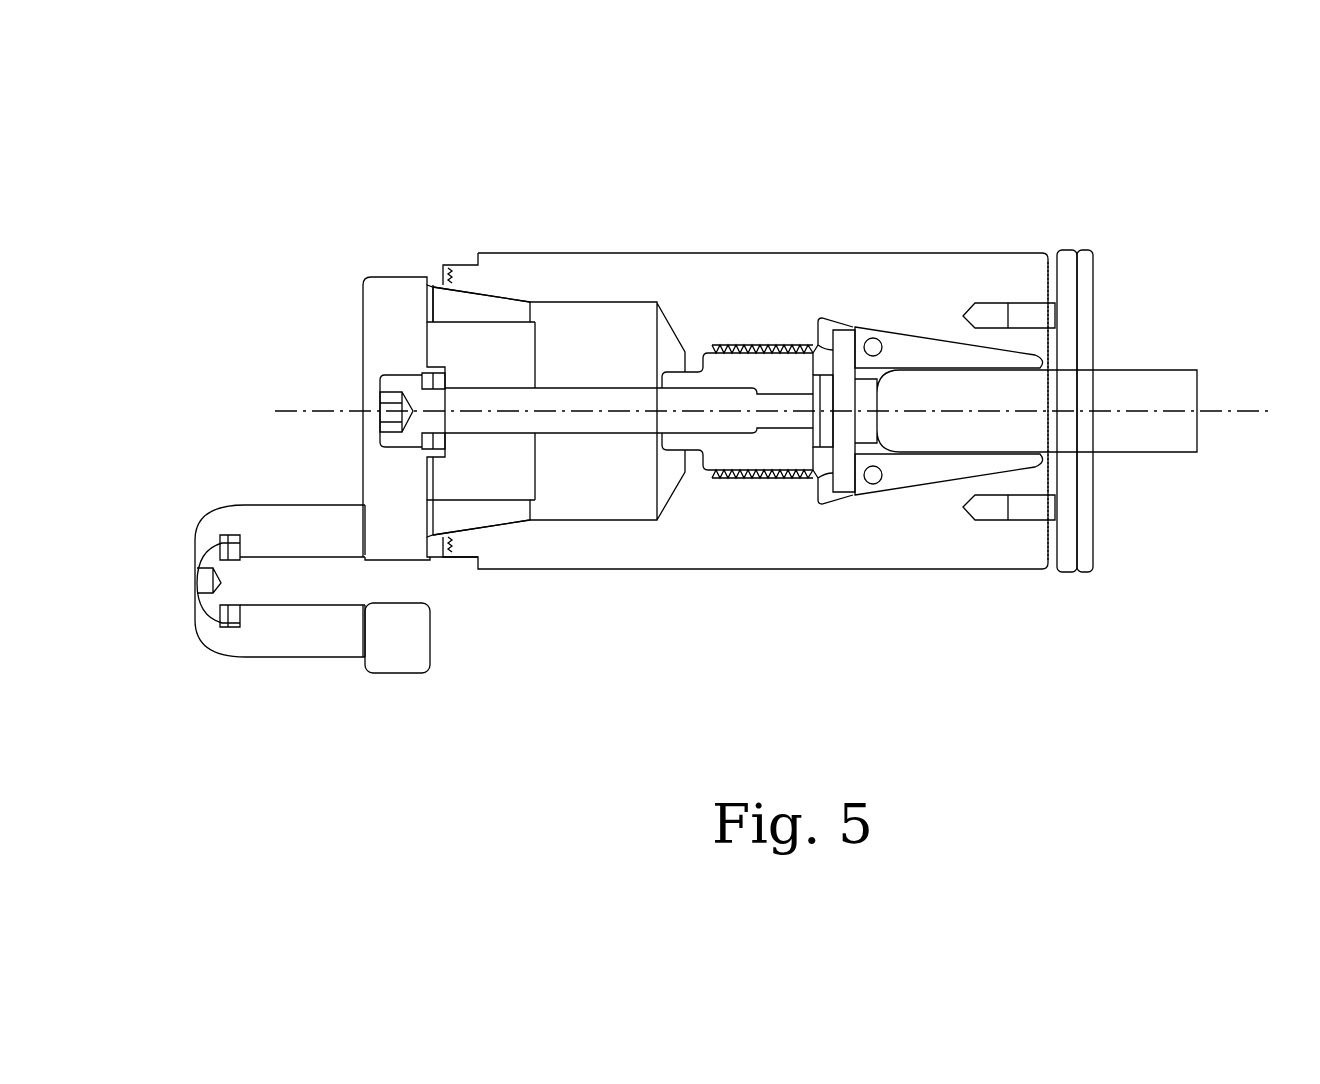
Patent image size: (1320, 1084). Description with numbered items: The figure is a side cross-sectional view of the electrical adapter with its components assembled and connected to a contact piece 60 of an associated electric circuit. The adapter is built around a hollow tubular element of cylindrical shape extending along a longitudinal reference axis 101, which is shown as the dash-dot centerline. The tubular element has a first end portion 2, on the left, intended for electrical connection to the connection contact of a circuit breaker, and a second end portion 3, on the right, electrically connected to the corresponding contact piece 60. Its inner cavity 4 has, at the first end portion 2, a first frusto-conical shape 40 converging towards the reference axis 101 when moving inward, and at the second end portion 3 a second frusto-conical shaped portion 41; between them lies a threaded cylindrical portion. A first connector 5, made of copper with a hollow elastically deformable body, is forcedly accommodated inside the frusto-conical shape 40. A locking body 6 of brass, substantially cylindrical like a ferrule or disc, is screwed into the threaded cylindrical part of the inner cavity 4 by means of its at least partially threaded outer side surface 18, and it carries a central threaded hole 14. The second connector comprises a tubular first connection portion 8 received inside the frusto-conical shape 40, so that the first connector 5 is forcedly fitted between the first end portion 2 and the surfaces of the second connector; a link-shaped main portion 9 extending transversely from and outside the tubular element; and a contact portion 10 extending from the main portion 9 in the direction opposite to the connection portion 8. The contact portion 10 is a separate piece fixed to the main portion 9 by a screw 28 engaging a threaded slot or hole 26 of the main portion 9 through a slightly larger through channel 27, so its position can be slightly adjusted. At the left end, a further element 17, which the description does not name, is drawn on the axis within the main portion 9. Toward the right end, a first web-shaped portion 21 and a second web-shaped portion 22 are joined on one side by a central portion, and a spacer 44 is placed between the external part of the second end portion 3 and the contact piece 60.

The first end portion 2 is at (480, 548).
The second end portion 3 is at (1028, 553).
The inner cavity 4 is at (648, 345).
The first connector 5 is at (519, 304).
The locking body 6 is at (722, 366).
The first connection portion 8 is at (477, 350).
The main portion 9 is at (393, 307).
The contact portion 10 is at (258, 638).
The threaded hole 14 is at (723, 433).
The fastening screw 17 is at (404, 385).
The outer side surface 18 is at (767, 348).
The first web-shaped portion 21 is at (921, 350).
The second web-shaped portion 22 is at (913, 470).
The threaded slot or hole 26 is at (408, 608).
The through channel 27 is at (323, 608).
The screw 28 is at (232, 580).
The first frusto-conical shape 40 is at (483, 297).
The second frusto-conical shaped portion 41 is at (830, 498).
The spacer 44 is at (1084, 283).
The contact piece 60 is at (1162, 378).
The longitudinal reference axis 101 is at (300, 406).